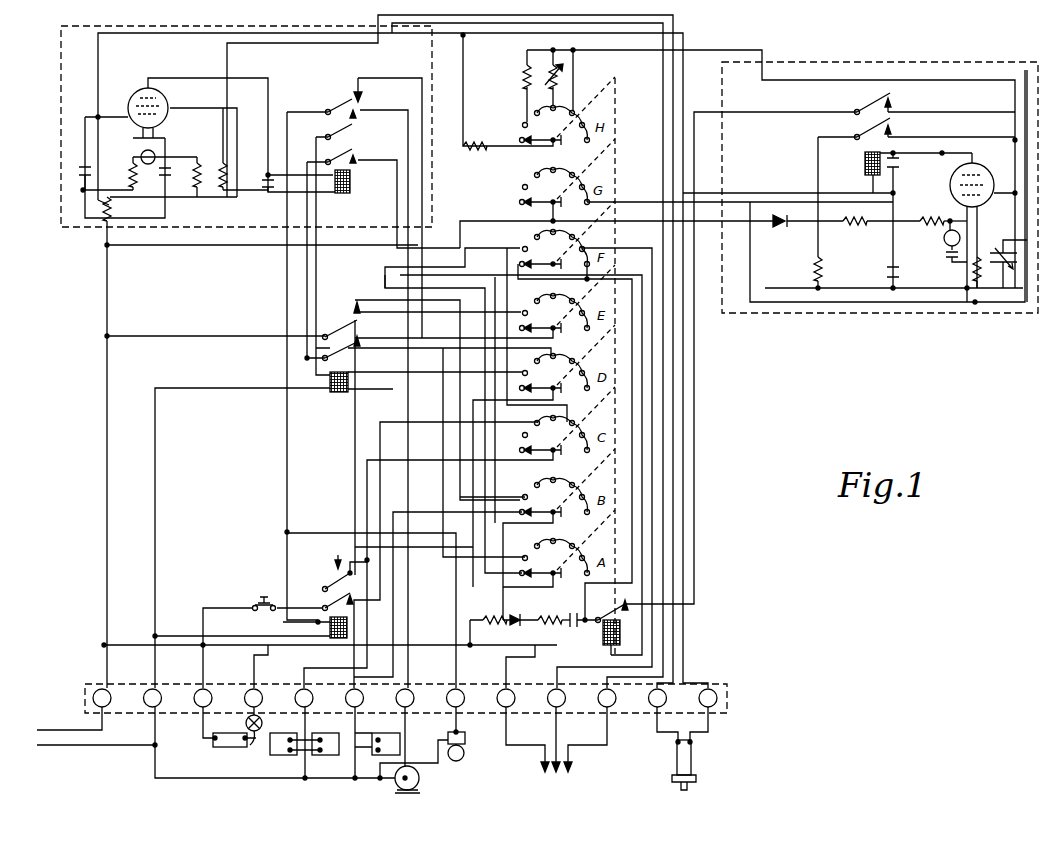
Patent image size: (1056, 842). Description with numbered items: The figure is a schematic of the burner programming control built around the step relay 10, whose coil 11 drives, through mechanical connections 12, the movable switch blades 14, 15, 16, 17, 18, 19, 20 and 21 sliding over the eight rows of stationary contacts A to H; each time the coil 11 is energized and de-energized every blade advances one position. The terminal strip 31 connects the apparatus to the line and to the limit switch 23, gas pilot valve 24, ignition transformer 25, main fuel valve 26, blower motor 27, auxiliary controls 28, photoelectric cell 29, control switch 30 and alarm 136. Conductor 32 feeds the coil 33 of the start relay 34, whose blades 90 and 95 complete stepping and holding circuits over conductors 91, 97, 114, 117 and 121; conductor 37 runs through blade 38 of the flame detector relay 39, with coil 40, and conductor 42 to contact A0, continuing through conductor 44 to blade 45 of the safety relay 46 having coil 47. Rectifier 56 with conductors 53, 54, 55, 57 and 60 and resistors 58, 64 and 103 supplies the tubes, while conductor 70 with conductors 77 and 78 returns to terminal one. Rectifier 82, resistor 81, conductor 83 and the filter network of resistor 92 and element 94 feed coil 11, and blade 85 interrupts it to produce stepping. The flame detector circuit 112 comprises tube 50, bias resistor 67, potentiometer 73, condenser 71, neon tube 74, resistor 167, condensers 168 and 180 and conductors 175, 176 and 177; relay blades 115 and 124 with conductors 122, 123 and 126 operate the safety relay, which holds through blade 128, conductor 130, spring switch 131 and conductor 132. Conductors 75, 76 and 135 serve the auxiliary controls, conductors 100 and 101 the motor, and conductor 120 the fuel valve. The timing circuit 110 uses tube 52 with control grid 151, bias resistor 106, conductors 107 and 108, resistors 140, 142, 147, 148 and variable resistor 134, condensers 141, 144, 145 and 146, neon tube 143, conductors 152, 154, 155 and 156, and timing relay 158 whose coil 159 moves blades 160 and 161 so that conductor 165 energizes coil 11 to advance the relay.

The step relay 10 is at (628, 399).
The coil 11 is at (625, 632).
The mechanical connections 12 is at (622, 460).
The movable switch blade 14 is at (500, 431).
The movable switch blade 15 is at (484, 563).
The movable switch blade 16 is at (459, 537).
The movable switch blade 17 is at (481, 456).
The movable switch blade 18 is at (485, 301).
The movable switch blade 19 is at (585, 444).
The movable switch blade 20 is at (707, 181).
The movable switch blade 21 is at (568, 111).
The thermostatic limit switch 23 is at (212, 745).
The gas pilot valve 24 is at (285, 757).
The ignition transformer 25 is at (333, 757).
The main fuel valve 26 is at (378, 757).
The blower motor 27 is at (420, 780).
The auxiliary controls 28 is at (556, 751).
The photoelectric cell 29 is at (695, 759).
The control switch 30 is at (250, 748).
The terminal strip 31 is at (738, 698).
The conductor 32 is at (160, 477).
The coil 33 is at (339, 394).
The start relay 34 is at (335, 290).
The conductor 37 is at (290, 258).
The movable switch blade 38 is at (325, 134).
The flame detector relay 39 is at (330, 70).
The coil 40 is at (351, 190).
The conductor 42 is at (400, 273).
The conductor 44 is at (357, 530).
The movable switch blade 45 is at (318, 585).
The safety relay 46 is at (343, 553).
The coil 47 is at (347, 628).
The vacuum tube 50 is at (143, 78).
The vacuum tube 52 is at (982, 153).
The conductor 53 is at (160, 634).
The conductor 54 is at (370, 616).
The conductor 55 is at (668, 432).
The rectifier 56 is at (785, 228).
The conductor 57 is at (810, 242).
The resistor 58 is at (881, 233).
The conductor 60 is at (794, 193).
The resistor 64 is at (193, 190).
The bias resistor 67 is at (125, 165).
The conductor 70 is at (105, 407).
The condenser 71 is at (190, 160).
The potentiometer 73 is at (100, 218).
The neon tube 74 is at (146, 165).
The conductor 75 is at (652, 510).
The conductor 76 is at (661, 488).
The conductor 77 is at (256, 650).
The conductor 78 is at (206, 664).
The resistor 81 is at (486, 616).
The rectifier 82 is at (500, 650).
The conductor 83 is at (553, 655).
The movable switch blade 85 is at (630, 606).
The switch blade 90 is at (320, 330).
The conductor 91 is at (194, 336).
The resistor 92 is at (530, 613).
The capacitor 94 is at (570, 613).
The movable switch blade 95 is at (310, 357).
The conductor 97 is at (305, 445).
The conductor 100 is at (200, 780).
The conductor 101 is at (410, 316).
The voltage dropping resistor 103 is at (936, 233).
The bias resistor 106 is at (990, 250).
The conductor 107 is at (750, 202).
The conductor 108 is at (486, 213).
The timing circuit 110 is at (768, 320).
The flame detector circuit 112 is at (52, 52).
The conductor 114 is at (305, 322).
The movable switch blade 115 is at (356, 145).
The conductor 117 is at (470, 256).
The conductor 120 is at (445, 404).
The conductor 121 is at (450, 370).
The conductor 122 is at (318, 630).
The conductor 123 is at (287, 412).
The movable switch blade 124 is at (324, 106).
The conductor 126 is at (418, 254).
The movable switch blade 128 is at (320, 605).
The conductor 130 is at (293, 602).
The spring type switch 131 is at (255, 600).
The conductor 132 is at (205, 609).
The variable timing resistor 134 is at (570, 76).
The conductor 135 is at (690, 369).
The alarm 136 is at (462, 758).
The resistor 140 is at (1018, 275).
The condenser 141 is at (975, 285).
The discharge resistor 142 is at (825, 290).
The neon indicator tube 143 is at (944, 255).
The filtering condenser 144 is at (935, 280).
The condenser 145 is at (900, 165).
The filtering condenser 146 is at (890, 285).
The timing resistor 147 is at (475, 152).
The timing resistor 148 is at (520, 75).
The control grid 151 is at (1000, 190).
The conductor 152 is at (1027, 75).
The conductor 154 is at (466, 70).
The conductor 155 is at (520, 100).
The conductor 156 is at (728, 50).
The timing relay 158 is at (872, 84).
The coil 159 is at (865, 162).
The movable switch blade 160 is at (895, 92).
The movable switch blade 161 is at (895, 121).
The conductor 165 is at (694, 348).
The voltage dropping resistor 167 is at (222, 185).
The time delay condenser 168 is at (80, 165).
The conductor 175 is at (186, 34).
The conductor 176 is at (275, 44).
The conductor 177 is at (78, 130).
The filter condenser 180 is at (262, 178).